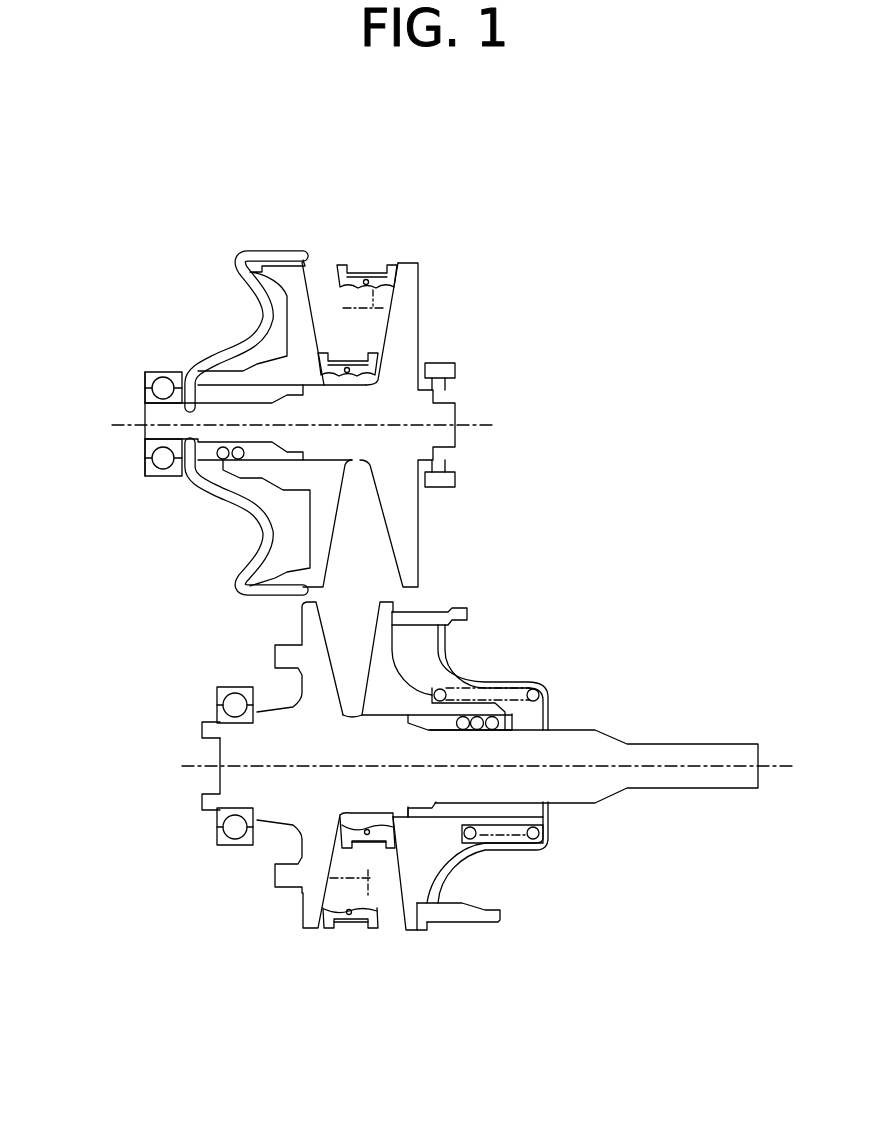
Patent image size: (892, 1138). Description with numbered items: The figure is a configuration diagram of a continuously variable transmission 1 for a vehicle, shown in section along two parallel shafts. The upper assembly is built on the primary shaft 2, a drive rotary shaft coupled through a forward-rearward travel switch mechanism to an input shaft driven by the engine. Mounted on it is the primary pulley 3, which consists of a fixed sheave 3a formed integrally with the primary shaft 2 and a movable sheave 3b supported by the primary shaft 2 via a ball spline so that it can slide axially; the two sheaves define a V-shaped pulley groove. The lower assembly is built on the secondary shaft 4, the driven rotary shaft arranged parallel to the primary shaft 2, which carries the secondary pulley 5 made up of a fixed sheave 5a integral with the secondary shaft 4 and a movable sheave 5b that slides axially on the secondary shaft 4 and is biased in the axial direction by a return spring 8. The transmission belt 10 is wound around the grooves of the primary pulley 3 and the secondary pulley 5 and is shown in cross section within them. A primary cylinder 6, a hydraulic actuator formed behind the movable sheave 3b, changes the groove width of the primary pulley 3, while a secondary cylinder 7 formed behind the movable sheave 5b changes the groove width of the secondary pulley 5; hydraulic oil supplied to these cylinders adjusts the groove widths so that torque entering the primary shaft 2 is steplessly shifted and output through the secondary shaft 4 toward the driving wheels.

The continuously variable transmission 1 is at (545, 518).
The primary shaft 2 is at (150, 417).
The primary pulley 3 is at (435, 178).
The fixed sheave 3a is at (407, 290).
The movable sheave 3b is at (297, 294).
The secondary shaft 4 is at (593, 752).
The secondary pulley 5 is at (408, 1022).
The fixed sheave 5a is at (302, 922).
The movable sheave 5b is at (418, 895).
The primary cylinder 6 is at (243, 331).
The secondary cylinder 7 is at (472, 870).
The return spring 8 is at (533, 695).
The transmission belt 10 is at (380, 365).